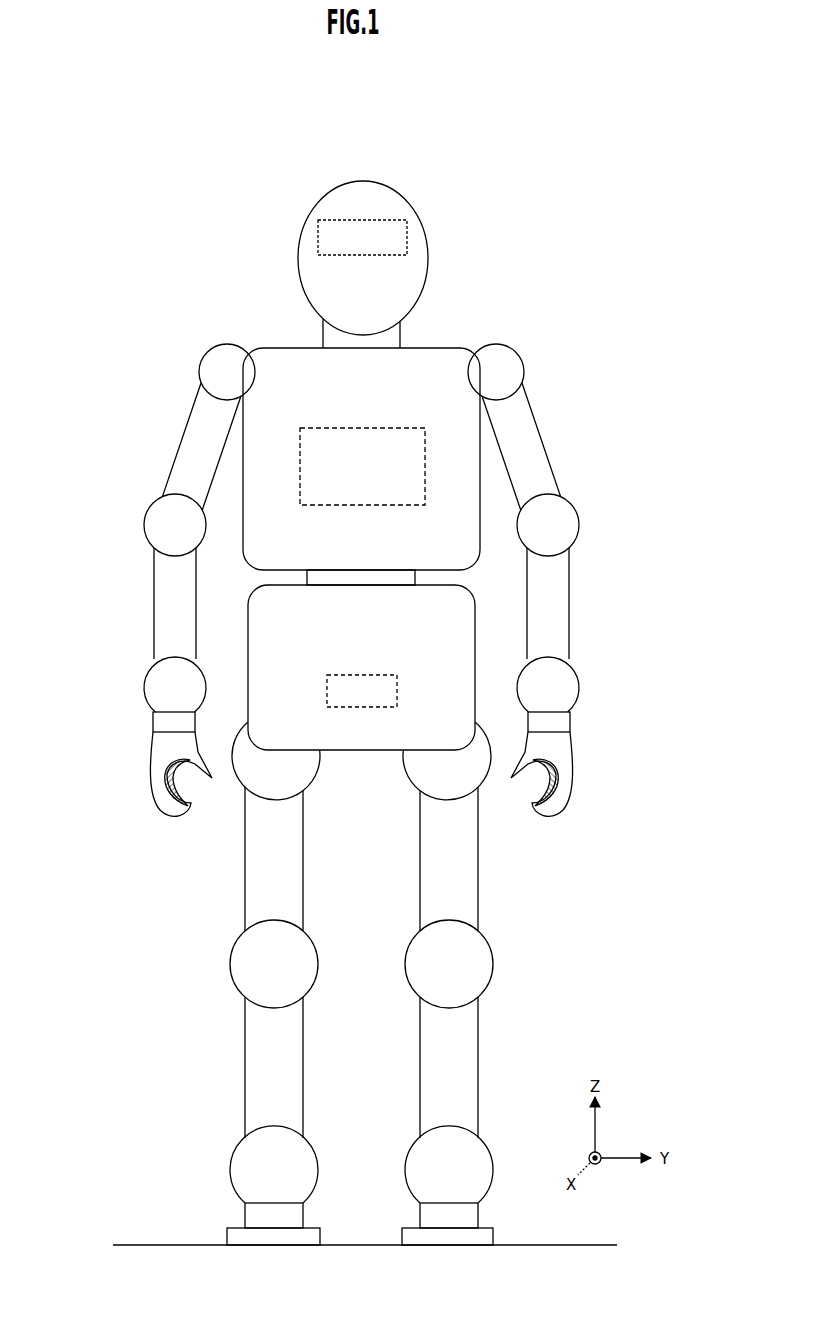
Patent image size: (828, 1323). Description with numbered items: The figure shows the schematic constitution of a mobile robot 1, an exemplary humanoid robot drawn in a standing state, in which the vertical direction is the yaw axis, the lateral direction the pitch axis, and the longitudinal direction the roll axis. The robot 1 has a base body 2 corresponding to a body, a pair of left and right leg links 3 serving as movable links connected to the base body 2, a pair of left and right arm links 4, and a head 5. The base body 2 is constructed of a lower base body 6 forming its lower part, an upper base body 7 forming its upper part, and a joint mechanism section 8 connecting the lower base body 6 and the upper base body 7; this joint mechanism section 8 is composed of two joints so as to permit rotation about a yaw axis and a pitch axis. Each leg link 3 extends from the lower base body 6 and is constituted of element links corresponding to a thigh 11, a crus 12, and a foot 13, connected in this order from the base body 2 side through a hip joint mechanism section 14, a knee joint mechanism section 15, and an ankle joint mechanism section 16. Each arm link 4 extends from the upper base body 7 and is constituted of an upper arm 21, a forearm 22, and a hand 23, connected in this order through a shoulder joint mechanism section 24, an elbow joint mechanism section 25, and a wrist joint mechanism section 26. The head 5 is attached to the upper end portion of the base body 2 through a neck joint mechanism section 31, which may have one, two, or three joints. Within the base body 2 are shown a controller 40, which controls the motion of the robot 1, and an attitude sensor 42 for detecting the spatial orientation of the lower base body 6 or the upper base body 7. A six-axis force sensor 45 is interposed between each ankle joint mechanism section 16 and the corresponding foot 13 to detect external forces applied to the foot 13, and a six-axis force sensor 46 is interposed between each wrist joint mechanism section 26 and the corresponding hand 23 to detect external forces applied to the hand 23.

The mobile robot 1 is at (528, 236).
The base body 2 is at (493, 507).
The leg link 3 is at (207, 925).
The arm link 4 is at (128, 572).
The head 5 is at (388, 204).
The lower base body 6 is at (468, 641).
The upper base body 7 is at (478, 541).
The joint mechanism section 8 is at (413, 577).
The thigh 11 is at (258, 889).
The crus 12 is at (258, 1061).
The foot 13 is at (237, 1238).
The hip joint mechanism section 14 is at (258, 776).
The knee joint mechanism section 15 is at (248, 963).
The ankle joint mechanism section 16 is at (245, 1156).
The upper arm 21 is at (198, 443).
The forearm 22 is at (161, 631).
The hand 23 is at (150, 771).
The shoulder joint mechanism section 24 is at (220, 372).
The elbow joint mechanism section 25 is at (160, 521).
The wrist joint mechanism section 26 is at (160, 686).
The neck joint mechanism section 31 is at (332, 337).
The controller 40 is at (372, 426).
The attitude sensor 42 is at (362, 672).
The force sensor 45 is at (255, 1214).
The force sensor 46 is at (153, 723).